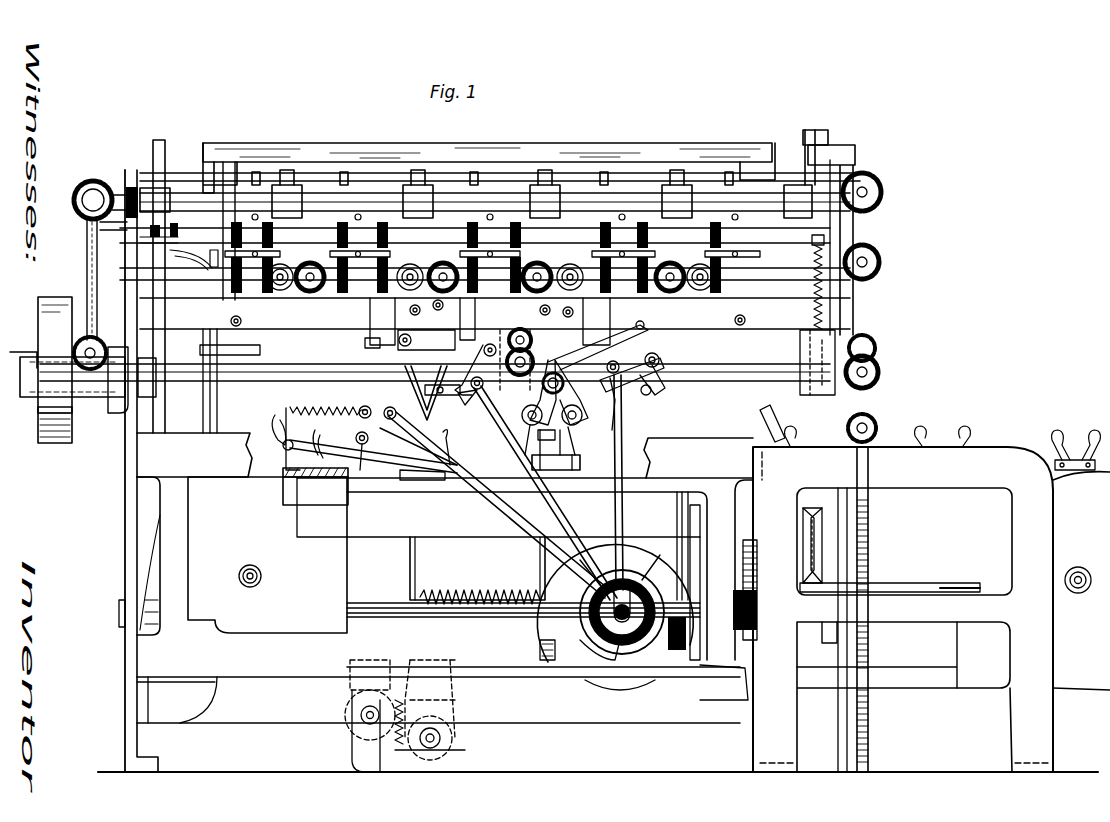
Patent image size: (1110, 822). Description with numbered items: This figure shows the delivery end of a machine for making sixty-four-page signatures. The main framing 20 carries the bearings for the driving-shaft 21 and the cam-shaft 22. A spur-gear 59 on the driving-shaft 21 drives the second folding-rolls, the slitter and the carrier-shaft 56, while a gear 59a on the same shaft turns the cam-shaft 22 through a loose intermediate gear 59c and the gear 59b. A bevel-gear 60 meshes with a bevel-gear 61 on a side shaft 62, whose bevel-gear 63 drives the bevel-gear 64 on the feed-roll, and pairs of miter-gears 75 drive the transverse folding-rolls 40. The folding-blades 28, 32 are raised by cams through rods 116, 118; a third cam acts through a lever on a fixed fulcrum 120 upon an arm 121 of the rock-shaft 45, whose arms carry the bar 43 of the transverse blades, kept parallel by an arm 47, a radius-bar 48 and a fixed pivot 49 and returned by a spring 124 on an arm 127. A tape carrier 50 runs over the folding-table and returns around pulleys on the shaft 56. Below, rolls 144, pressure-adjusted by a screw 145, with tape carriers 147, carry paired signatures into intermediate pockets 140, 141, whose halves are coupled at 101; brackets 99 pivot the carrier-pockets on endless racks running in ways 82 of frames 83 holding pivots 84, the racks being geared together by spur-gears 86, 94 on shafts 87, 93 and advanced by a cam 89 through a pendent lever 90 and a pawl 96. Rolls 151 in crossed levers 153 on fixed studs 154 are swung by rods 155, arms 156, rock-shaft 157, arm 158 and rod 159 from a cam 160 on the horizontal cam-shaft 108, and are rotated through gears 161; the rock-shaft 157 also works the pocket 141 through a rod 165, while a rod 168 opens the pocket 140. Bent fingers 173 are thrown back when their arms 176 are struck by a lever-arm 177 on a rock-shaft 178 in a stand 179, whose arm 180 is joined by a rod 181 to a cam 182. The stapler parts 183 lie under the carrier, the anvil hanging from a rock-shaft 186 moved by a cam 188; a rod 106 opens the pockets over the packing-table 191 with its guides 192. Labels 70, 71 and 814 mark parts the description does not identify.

The main framing 20 is at (845, 318).
The driving-shaft 21 is at (895, 380).
The cam-shaft 22 is at (510, 620).
The folding-blade 28 is at (487, 168).
The folding-blade 32 is at (235, 178).
The folding-rolls 40 is at (262, 292).
The bar 43 is at (728, 166).
The rock-shaft 45 is at (632, 200).
The arm 47 is at (805, 143).
The radius-bar 48 is at (828, 137).
The fixed pivot 49 is at (860, 160).
The carrier 50 is at (231, 350).
The rotary shaft 56 is at (868, 280).
The spur-gear 59 is at (815, 373).
The gear 59a is at (868, 360).
The gear 59b is at (871, 609).
The intermediate loose gear 59c is at (870, 420).
The bevel-gear 60 is at (112, 375).
The bevel-gear 61 is at (74, 350).
The side shaft 62 is at (100, 255).
The bevel-gear 63 is at (92, 202).
The bevel-gear 64 is at (126, 185).
The hanger 70 is at (372, 205).
The bracket 71 is at (160, 245).
The miter-gears 75 is at (312, 293).
The horizontal ways 82 is at (450, 490).
The frames 83 is at (696, 581).
The pivots 84 is at (258, 568).
The spur-gear 86 is at (418, 748).
The shaft 87 is at (445, 740).
The cam 89 is at (560, 660).
The lever 90 is at (545, 580).
The shaft 93 is at (368, 722).
The spur-gears 94 is at (386, 728).
The pawl 96 is at (480, 585).
The brackets 99 is at (578, 463).
The pin-and-slot connection 101 is at (435, 400).
The rod 106 is at (615, 603).
The horizontal shaft 108 is at (621, 660).
The rod 116 is at (217, 394).
The rod 118 is at (206, 392).
The fixed fulcrum 120 is at (200, 405).
The arm 121 is at (152, 162).
The spring 124 is at (815, 320).
The arm 127 is at (835, 230).
The rearward intermediate pocket 140 is at (420, 405).
The forward intermediate pocket 141 is at (557, 439).
The rolls 144 is at (427, 332).
The adjusting-screw 145 is at (365, 343).
The tape carriers 147 is at (471, 361).
The rolls 151 is at (555, 440).
The crossed levers 153 is at (585, 405).
The fixed studs 154 is at (530, 374).
The rods 155 is at (636, 411).
The arms 156 is at (665, 355).
The rock-shaft 157 is at (655, 392).
The arm 158 is at (592, 375).
The rod 159 is at (634, 482).
The cam 160 is at (605, 632).
The gears 161 is at (504, 359).
The rod 165 is at (635, 407).
The rod 168 is at (557, 535).
The bent fingers 173 is at (943, 430).
The arm 176 is at (1076, 442).
The lever-arm 177 is at (392, 448).
The rock-shaft 178 is at (395, 470).
The stand 179 is at (283, 478).
The arm 180 is at (362, 438).
The rod 181 is at (510, 522).
The cam 182 is at (319, 427).
The stapler parts 183 is at (700, 523).
The rock-shaft 186 is at (762, 425).
The cam 188 is at (584, 638).
The packing-table 191 is at (935, 588).
The guides 192 is at (825, 540).
The bolt 814 is at (1080, 592).